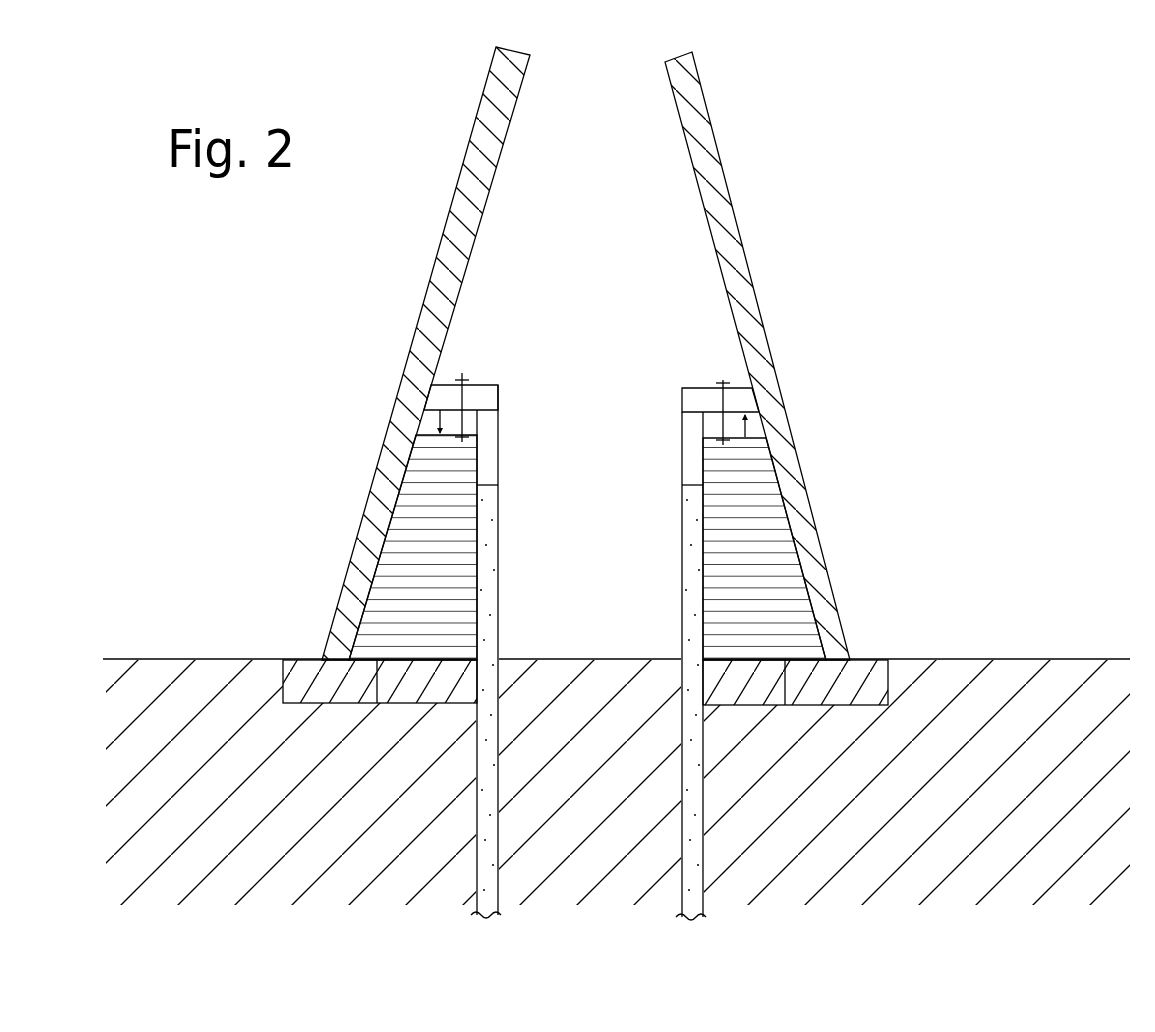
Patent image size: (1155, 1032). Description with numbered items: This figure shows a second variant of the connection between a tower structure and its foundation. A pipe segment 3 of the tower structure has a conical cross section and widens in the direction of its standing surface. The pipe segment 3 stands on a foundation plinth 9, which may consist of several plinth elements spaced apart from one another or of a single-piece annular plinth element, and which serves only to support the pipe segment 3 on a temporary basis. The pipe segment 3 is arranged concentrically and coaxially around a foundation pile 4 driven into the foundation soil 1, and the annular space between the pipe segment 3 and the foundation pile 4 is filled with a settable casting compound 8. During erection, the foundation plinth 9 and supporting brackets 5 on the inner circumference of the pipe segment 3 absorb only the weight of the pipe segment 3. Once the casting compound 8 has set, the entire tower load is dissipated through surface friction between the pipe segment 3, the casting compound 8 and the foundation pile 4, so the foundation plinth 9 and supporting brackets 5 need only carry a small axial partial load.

The foundation soil 1 is at (873, 857).
The pipe segment 3 is at (706, 104).
The foundation pile 4 is at (478, 778).
The supporting brackets 5 is at (708, 400).
The settable casting compound 8 is at (765, 593).
The foundation plinth 9 is at (780, 712).